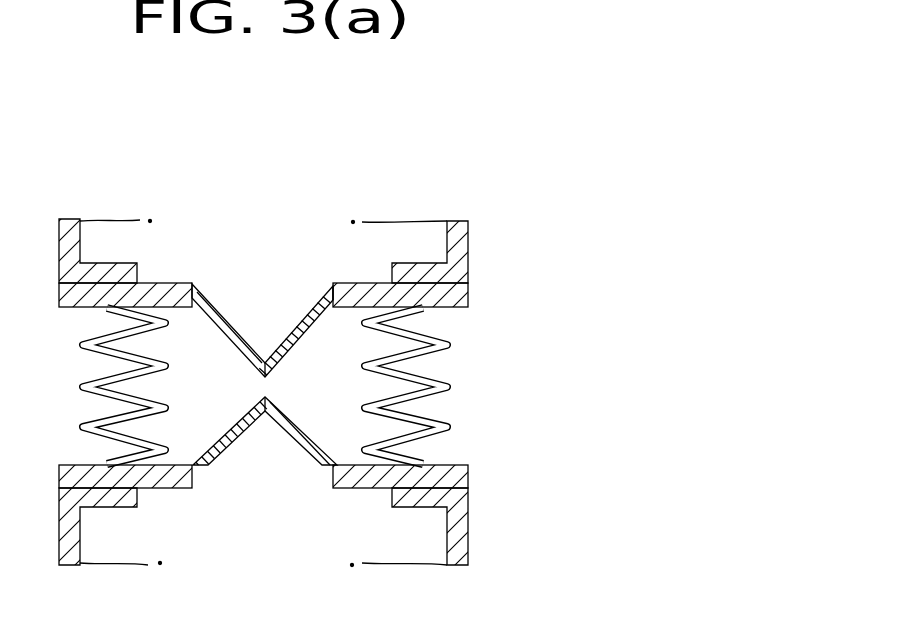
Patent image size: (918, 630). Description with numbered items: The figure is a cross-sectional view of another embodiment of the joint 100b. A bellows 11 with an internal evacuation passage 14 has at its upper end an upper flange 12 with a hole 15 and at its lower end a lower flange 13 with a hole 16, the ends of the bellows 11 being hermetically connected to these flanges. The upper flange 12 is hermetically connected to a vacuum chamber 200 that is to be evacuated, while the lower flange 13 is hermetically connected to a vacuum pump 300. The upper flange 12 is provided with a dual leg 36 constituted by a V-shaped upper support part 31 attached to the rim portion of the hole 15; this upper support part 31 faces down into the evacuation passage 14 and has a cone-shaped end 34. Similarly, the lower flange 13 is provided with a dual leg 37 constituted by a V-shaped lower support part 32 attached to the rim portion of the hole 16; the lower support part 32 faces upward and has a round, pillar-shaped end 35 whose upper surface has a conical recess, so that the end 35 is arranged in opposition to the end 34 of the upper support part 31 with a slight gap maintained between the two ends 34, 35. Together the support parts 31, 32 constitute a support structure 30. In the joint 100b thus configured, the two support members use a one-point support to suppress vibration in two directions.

The joint 100b is at (96, 203).
The support structure 30 is at (259, 256).
The upper support part 31 is at (212, 300).
The lower support part 32 is at (240, 335).
The hole 15 is at (270, 320).
The dual leg 36 is at (306, 305).
The vacuum chamber 200 is at (462, 262).
The upper flange 12 is at (467, 297).
The cone-shaped end 34 is at (280, 372).
The round, pillar-shaped end 35 is at (278, 396).
The evacuation passage 14 is at (220, 399).
The bellows 11 is at (447, 400).
The lower flange 13 is at (455, 478).
The dual leg 37 is at (217, 457).
The hole 16 is at (265, 443).
The vacuum pump 300 is at (460, 535).